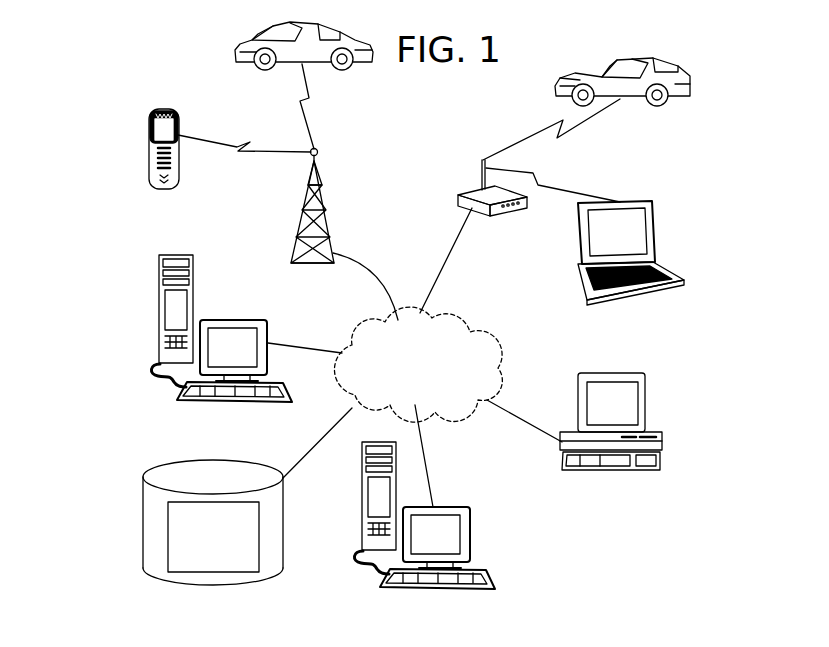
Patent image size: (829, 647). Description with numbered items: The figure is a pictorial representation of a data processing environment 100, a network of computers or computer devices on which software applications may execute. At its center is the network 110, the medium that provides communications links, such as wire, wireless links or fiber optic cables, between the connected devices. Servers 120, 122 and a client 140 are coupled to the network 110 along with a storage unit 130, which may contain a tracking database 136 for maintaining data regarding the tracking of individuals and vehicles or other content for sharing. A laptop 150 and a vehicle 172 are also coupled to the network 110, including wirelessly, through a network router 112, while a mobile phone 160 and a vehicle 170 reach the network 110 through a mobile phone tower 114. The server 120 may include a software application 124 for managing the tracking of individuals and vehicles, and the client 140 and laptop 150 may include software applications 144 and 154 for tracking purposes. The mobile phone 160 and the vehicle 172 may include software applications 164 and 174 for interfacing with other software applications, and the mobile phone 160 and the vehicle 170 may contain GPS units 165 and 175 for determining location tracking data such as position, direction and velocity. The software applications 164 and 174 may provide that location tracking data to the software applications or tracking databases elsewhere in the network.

The data processing environment 100 is at (383, 205).
The network 110 is at (438, 385).
The network router 112 is at (413, 205).
The mobile phone tower 114 is at (338, 307).
The server 120 is at (211, 446).
The server 122 is at (424, 538).
The software application 124 is at (160, 330).
The storage unit 130 is at (273, 488).
The tracking database 136 is at (236, 570).
The client 140 is at (596, 516).
The software application 144 is at (663, 437).
The laptop 150 is at (623, 345).
The software application 154 is at (653, 257).
The mobile phone 160 is at (142, 221).
The software application 164 is at (152, 125).
The GPS unit 165 is at (178, 112).
The vehicle 170 is at (175, 68).
The vehicle 172 is at (705, 80).
The software application 174 is at (638, 100).
The GPS unit 175 is at (325, 66).